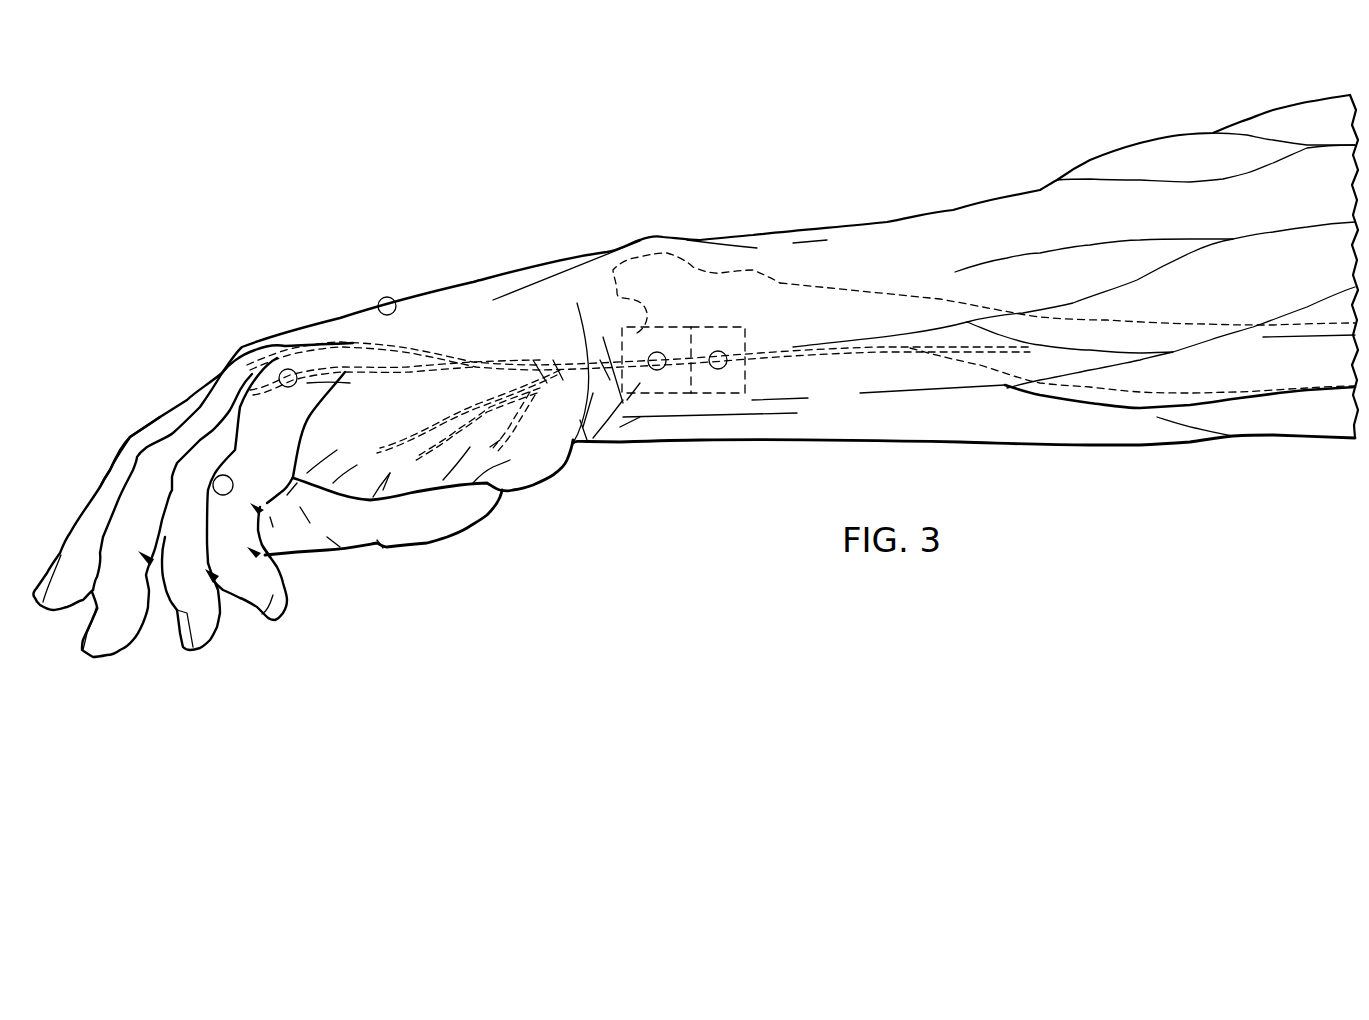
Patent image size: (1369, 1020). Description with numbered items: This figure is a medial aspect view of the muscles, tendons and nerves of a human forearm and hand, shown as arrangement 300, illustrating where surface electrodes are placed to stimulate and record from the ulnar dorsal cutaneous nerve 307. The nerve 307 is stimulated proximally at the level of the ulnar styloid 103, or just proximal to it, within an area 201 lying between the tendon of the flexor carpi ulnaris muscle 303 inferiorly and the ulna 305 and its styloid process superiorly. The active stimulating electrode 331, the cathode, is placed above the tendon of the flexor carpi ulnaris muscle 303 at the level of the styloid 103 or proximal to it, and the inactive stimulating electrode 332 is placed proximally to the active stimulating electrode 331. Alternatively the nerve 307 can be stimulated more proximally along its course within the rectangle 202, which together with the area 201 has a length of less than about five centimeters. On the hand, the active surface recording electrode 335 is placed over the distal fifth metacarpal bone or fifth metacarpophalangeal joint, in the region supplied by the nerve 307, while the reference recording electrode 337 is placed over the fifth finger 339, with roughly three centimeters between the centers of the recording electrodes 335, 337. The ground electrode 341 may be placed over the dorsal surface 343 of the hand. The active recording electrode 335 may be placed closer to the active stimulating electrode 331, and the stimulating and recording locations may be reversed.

The sensor system on hand and forearm 300 is at (238, 181).
The ulnar styloid 103 is at (603, 278).
The area 201 is at (656, 326).
The rectangle 202 is at (740, 326).
The flexor carpi ulnaris muscle 303 is at (1137, 400).
The ulna 305 is at (980, 357).
The ulnar dorsal cutaneous nerve 307 is at (817, 353).
The first surface electrode 331 is at (660, 370).
The inactive stimulating electrode 332 is at (722, 370).
The second surface electrode 335 is at (288, 368).
The reference electrode 337 is at (233, 475).
The fifth finger 339 is at (275, 593).
The ground electrode 341 is at (387, 297).
The dorsal surface 343 is at (472, 278).